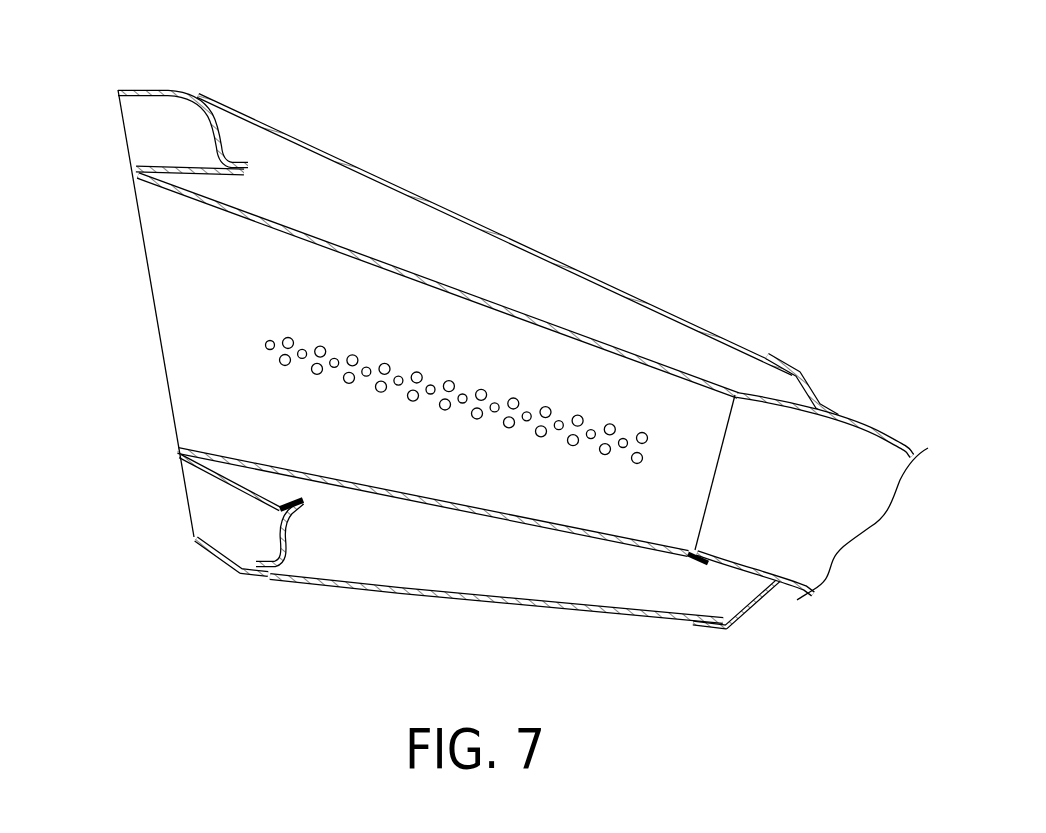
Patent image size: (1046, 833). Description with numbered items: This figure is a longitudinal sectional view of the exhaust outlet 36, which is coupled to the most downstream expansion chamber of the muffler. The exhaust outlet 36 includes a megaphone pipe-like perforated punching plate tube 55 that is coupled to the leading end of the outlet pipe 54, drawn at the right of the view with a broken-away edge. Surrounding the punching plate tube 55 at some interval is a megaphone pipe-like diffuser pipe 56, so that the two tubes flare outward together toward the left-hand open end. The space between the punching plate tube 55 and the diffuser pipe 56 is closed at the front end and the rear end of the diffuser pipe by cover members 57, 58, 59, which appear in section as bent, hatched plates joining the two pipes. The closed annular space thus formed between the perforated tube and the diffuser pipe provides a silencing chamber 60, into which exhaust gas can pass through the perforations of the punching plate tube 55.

The exhaust outlet 36 is at (562, 152).
The outlet pipe 54 is at (883, 432).
The perforated punching plate tube 55 is at (335, 243).
The diffuser pipe 56 is at (472, 222).
The cover member 57 is at (808, 384).
The cover member 58 is at (158, 163).
The cover member 59 is at (158, 90).
The silencing chamber 60 is at (614, 307).